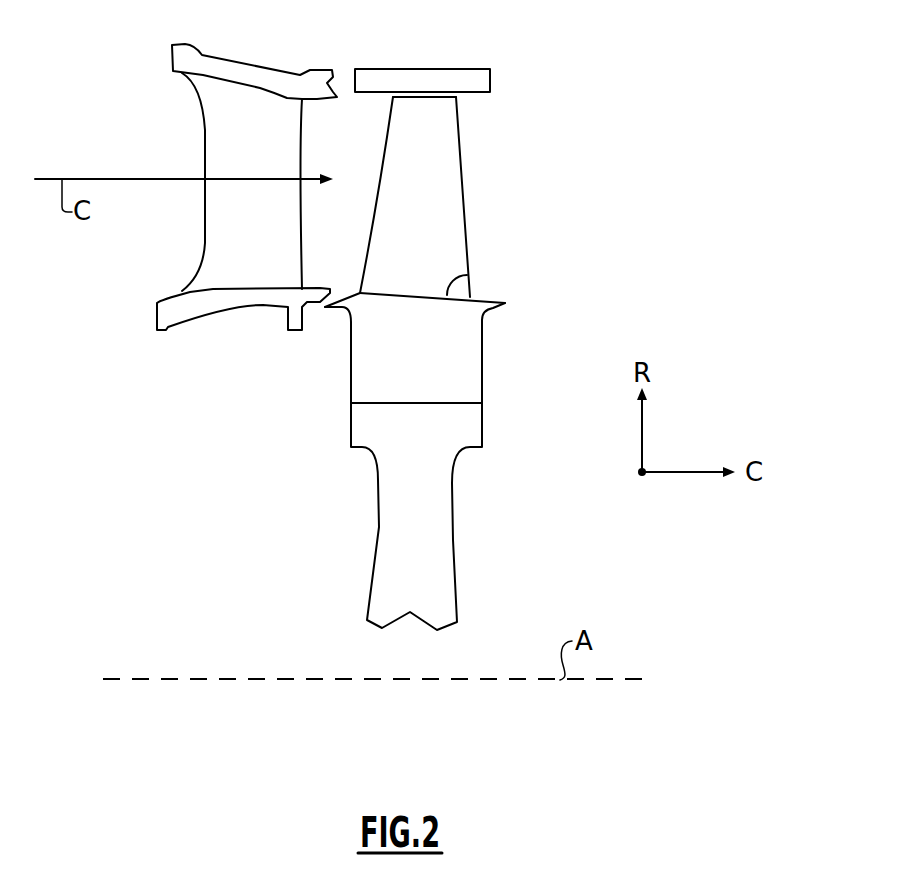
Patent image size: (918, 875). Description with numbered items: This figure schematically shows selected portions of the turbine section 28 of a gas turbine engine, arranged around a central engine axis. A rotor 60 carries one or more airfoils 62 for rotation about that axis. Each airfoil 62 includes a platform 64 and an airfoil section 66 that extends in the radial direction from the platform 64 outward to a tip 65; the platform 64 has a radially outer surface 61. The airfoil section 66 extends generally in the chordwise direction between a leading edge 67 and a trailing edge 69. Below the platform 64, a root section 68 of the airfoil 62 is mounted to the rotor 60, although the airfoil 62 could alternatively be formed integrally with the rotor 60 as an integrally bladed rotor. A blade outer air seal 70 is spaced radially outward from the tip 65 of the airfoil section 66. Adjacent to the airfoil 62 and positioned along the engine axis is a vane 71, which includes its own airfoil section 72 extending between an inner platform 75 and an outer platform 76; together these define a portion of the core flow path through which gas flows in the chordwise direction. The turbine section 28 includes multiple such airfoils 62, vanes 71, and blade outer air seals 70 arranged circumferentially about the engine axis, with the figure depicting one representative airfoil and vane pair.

The turbine section 28 is at (542, 97).
The rotor 60 is at (452, 491).
The radially outer surface 61 is at (468, 268).
The airfoil 62 is at (508, 178).
The platform 64 is at (343, 295).
The tip 65 is at (405, 97).
The airfoil section 66 is at (450, 195).
The leading edge 67 is at (384, 148).
The root section 68 is at (482, 363).
The trailing edge 69 is at (460, 148).
The blade outer air seal 70 is at (471, 69).
The vane 71 is at (168, 121).
The airfoil section 72 is at (228, 222).
The inner platform 75 is at (157, 317).
The outer platform 76 is at (172, 50).